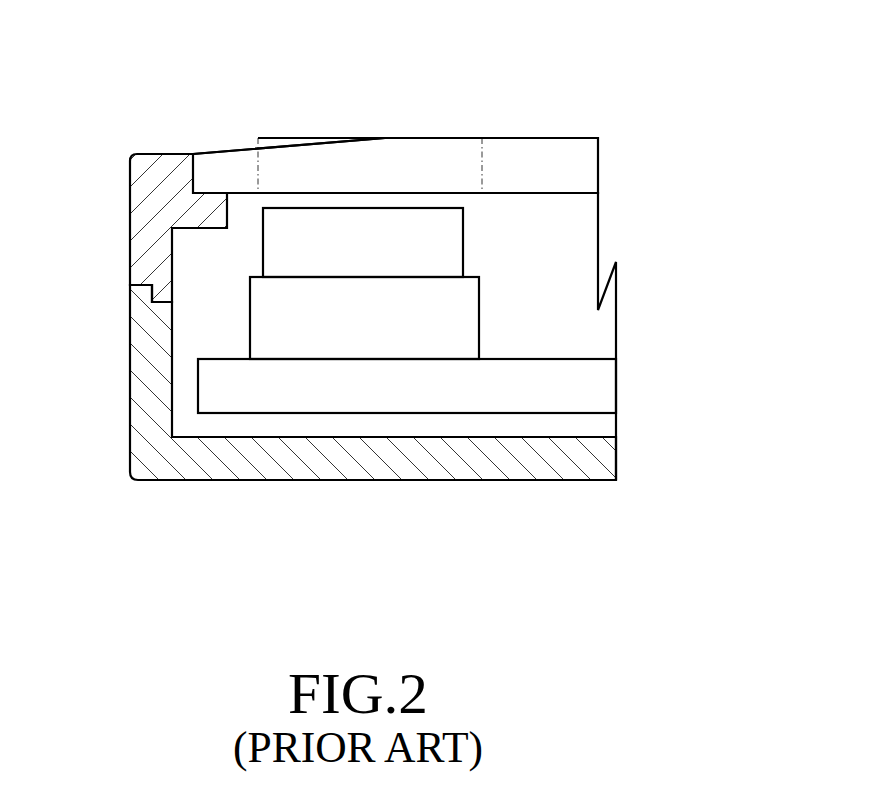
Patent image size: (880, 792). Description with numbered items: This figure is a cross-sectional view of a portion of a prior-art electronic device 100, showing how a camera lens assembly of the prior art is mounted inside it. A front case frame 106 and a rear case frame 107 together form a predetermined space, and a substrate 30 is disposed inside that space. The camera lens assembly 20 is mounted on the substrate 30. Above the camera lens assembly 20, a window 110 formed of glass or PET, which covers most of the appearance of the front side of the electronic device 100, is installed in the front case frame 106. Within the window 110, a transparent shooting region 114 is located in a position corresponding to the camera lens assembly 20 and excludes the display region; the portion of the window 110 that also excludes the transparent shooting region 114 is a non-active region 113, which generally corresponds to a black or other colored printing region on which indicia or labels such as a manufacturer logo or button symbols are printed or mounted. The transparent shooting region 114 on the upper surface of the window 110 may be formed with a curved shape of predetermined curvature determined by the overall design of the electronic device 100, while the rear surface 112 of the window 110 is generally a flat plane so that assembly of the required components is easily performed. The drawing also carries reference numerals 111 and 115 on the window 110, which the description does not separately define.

The electronic device 100 is at (177, 72).
The front case frame 106 is at (130, 228).
The rear case frame 107 is at (130, 416).
The window 110 is at (583, 128).
The top surface of cover glass 111 is at (387, 138).
The rear surface 112 is at (537, 197).
The non-active region 113 is at (527, 153).
The transparent shooting region 114 is at (453, 153).
The inner region of cover glass 115 is at (350, 195).
The camera lens assembly 20 is at (480, 300).
The substrate 30 is at (560, 358).